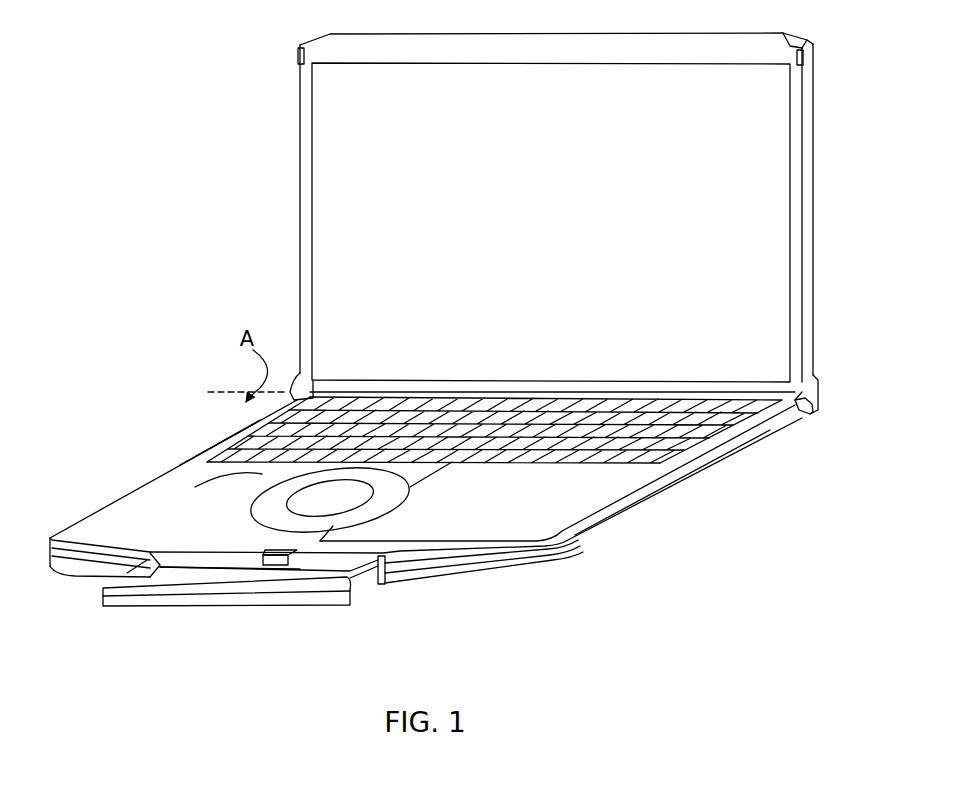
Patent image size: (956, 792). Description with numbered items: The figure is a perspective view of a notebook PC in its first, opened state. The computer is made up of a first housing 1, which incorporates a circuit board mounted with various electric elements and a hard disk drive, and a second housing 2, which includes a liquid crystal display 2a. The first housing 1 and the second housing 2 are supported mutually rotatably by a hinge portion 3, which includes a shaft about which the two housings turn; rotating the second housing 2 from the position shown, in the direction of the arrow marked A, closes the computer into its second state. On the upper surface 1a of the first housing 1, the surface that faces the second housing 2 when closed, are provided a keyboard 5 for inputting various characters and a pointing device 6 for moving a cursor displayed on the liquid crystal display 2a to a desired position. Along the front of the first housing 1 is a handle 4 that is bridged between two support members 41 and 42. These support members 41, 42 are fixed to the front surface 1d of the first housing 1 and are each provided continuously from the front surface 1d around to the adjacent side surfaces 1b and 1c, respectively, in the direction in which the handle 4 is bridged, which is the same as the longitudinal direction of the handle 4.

The first housing 1 is at (668, 500).
The upper surface 1a is at (153, 527).
The side surface 1b is at (199, 447).
The side surface 1c is at (605, 522).
The front surface 1d is at (210, 570).
The second housing 2 is at (300, 208).
The liquid crystal display 2a is at (332, 151).
The hinge portion 3 is at (810, 414).
The handle 4 is at (287, 610).
The support member 41 is at (90, 574).
The support member 42 is at (455, 578).
The keyboard 5 is at (700, 432).
The pointing device 6 is at (310, 500).